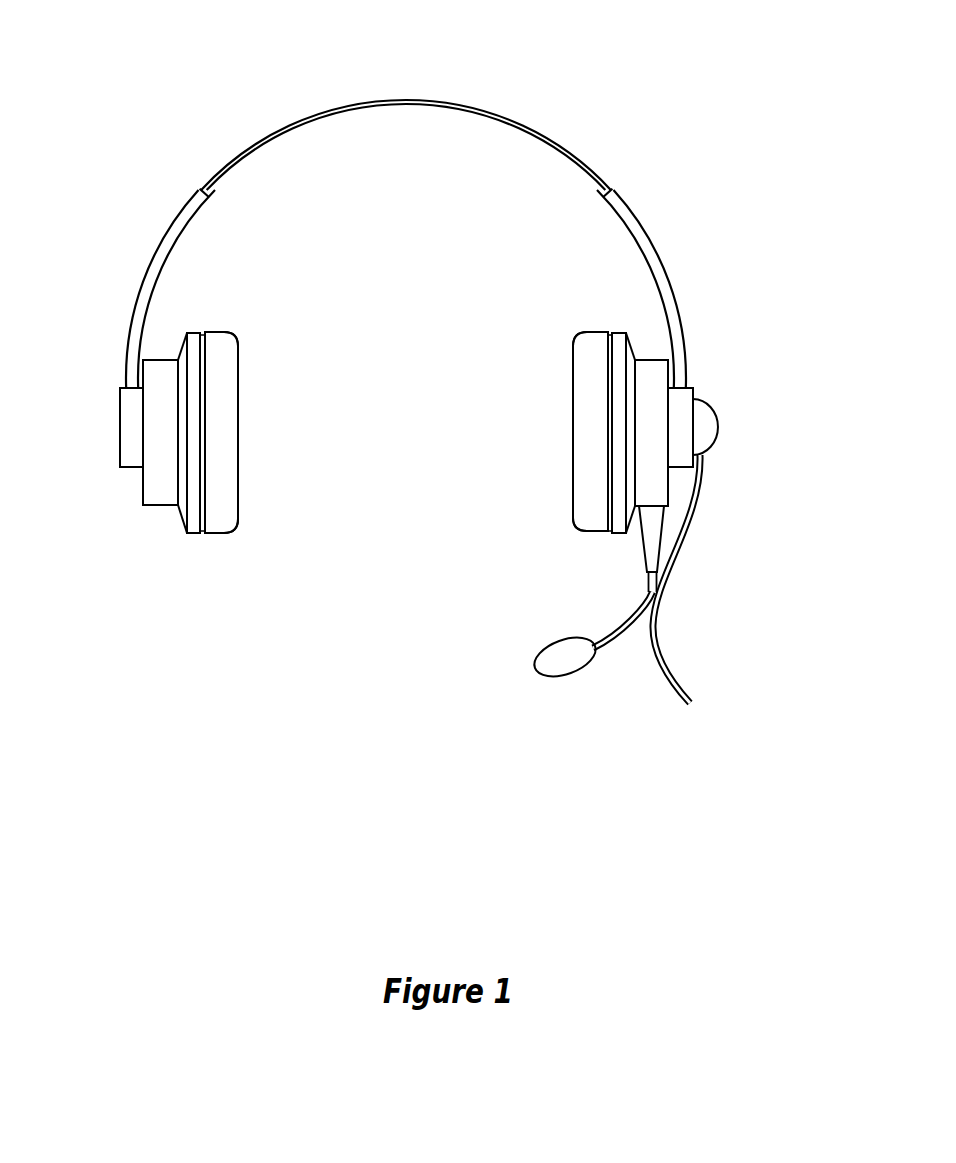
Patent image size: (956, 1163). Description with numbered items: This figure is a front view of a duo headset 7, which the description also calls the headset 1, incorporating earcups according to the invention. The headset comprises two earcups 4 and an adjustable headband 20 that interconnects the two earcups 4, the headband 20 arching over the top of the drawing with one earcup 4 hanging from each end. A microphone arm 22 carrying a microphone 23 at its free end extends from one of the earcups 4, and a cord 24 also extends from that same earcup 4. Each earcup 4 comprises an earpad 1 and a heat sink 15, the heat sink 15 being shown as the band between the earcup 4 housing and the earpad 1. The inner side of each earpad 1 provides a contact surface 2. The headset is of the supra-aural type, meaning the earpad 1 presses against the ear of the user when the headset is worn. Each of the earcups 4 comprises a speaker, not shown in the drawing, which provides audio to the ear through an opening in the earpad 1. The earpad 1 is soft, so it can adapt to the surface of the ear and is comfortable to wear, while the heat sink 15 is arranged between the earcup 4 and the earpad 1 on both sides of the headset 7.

The headset 7 is at (664, 133).
The adjustable headband 20 is at (377, 98).
The earcup 4 is at (163, 483).
The heat sink 15 is at (193, 340).
The contact surface 2 is at (240, 382).
The earpad 1 is at (220, 507).
The microphone arm 22 is at (688, 550).
The microphone 23 is at (563, 660).
The cord 24 is at (660, 645).